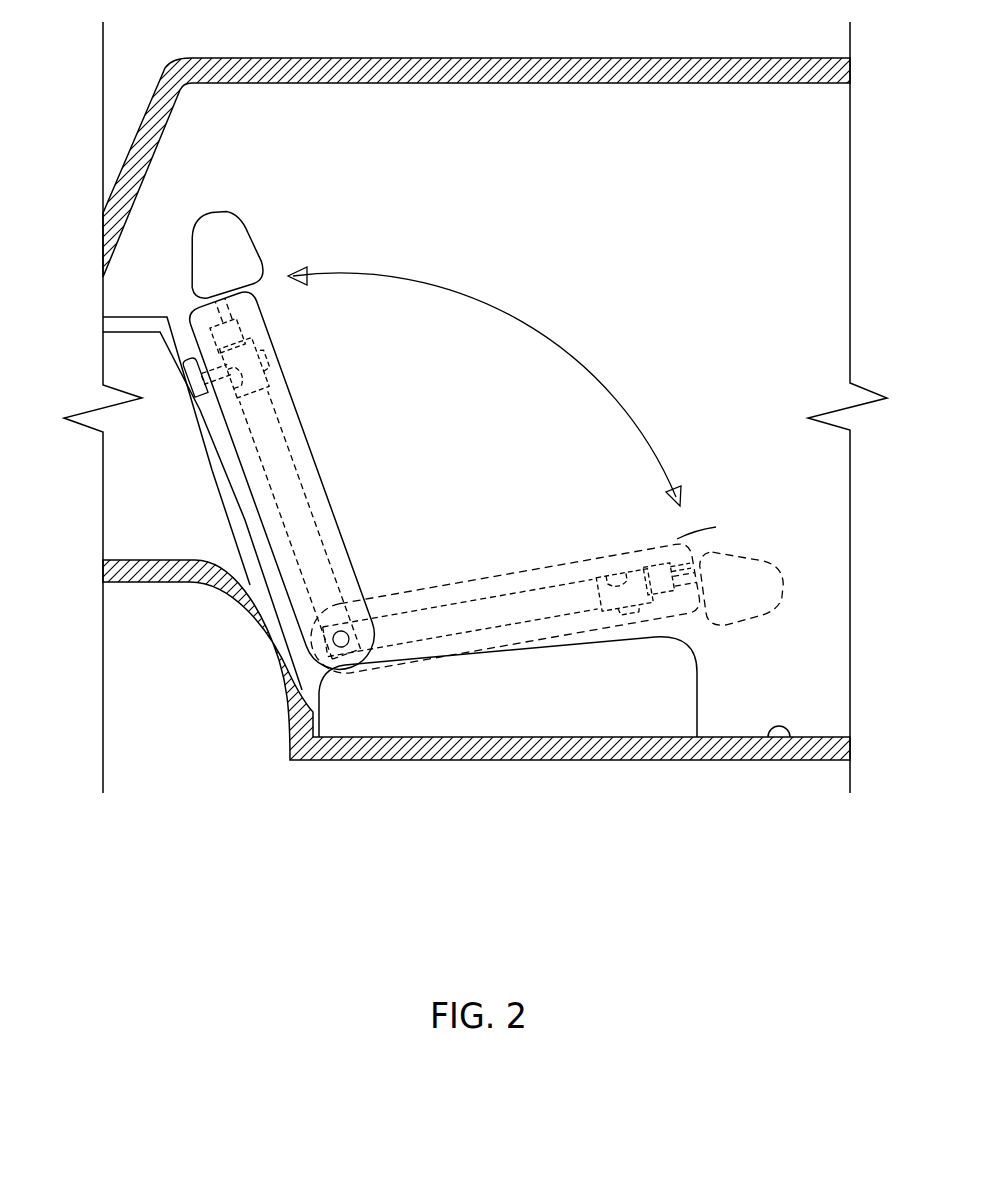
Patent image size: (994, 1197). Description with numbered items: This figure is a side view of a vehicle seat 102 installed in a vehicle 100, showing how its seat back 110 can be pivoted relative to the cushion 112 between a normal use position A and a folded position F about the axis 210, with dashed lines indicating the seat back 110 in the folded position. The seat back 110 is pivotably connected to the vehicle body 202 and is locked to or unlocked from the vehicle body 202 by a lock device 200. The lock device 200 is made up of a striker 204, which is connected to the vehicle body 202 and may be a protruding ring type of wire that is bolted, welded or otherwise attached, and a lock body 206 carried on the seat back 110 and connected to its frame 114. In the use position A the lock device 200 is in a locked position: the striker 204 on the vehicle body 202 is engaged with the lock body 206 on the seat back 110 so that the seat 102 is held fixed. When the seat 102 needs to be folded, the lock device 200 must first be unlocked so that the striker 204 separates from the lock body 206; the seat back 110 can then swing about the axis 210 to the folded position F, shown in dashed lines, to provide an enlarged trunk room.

The vehicle 100 is at (518, 101).
The vehicle seat 102 is at (449, 469).
The seat back 110 is at (357, 563).
The cushion 112 is at (700, 706).
The frame 114 is at (318, 514).
The lock device 200 is at (243, 358).
The vehicle body 202 is at (226, 518).
The striker 204 is at (190, 361).
The lock body 206 is at (252, 343).
The axis 210 is at (349, 640).